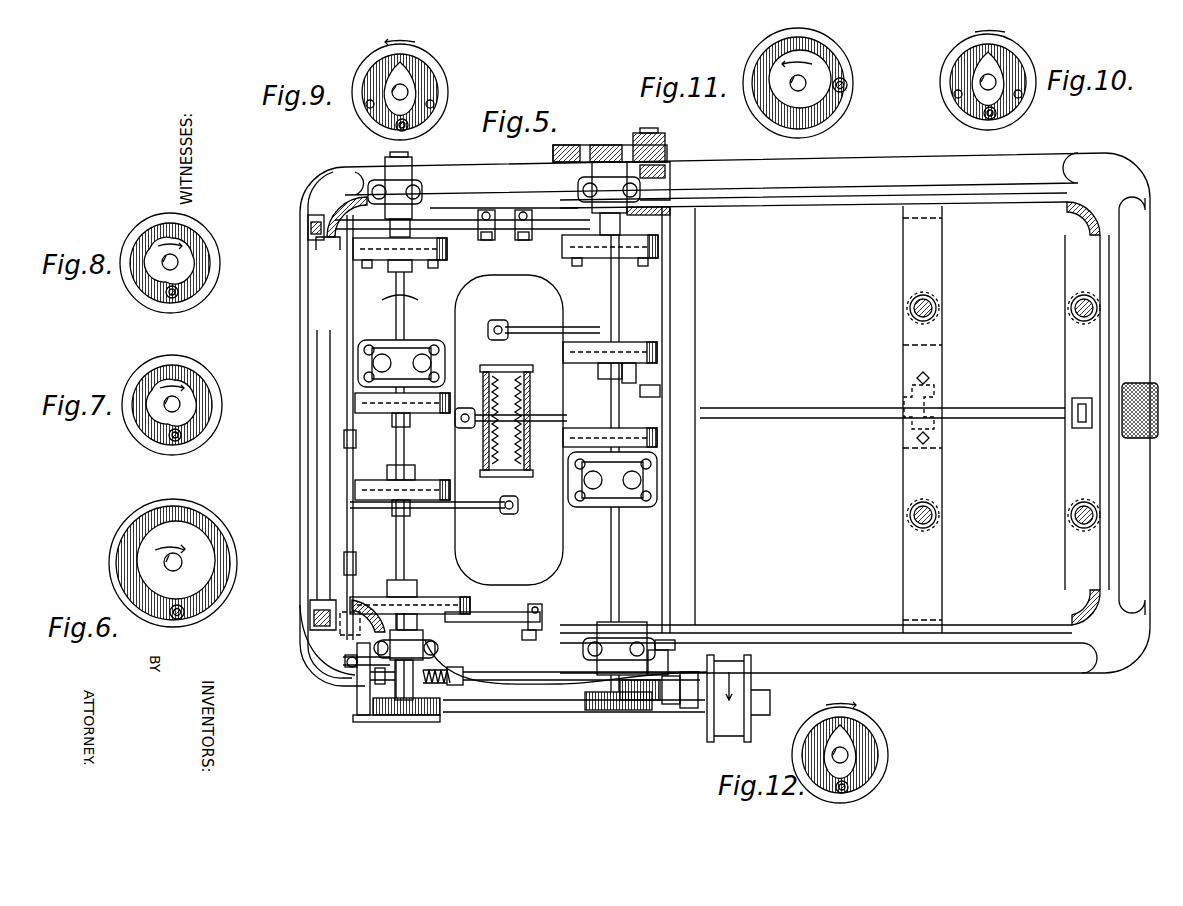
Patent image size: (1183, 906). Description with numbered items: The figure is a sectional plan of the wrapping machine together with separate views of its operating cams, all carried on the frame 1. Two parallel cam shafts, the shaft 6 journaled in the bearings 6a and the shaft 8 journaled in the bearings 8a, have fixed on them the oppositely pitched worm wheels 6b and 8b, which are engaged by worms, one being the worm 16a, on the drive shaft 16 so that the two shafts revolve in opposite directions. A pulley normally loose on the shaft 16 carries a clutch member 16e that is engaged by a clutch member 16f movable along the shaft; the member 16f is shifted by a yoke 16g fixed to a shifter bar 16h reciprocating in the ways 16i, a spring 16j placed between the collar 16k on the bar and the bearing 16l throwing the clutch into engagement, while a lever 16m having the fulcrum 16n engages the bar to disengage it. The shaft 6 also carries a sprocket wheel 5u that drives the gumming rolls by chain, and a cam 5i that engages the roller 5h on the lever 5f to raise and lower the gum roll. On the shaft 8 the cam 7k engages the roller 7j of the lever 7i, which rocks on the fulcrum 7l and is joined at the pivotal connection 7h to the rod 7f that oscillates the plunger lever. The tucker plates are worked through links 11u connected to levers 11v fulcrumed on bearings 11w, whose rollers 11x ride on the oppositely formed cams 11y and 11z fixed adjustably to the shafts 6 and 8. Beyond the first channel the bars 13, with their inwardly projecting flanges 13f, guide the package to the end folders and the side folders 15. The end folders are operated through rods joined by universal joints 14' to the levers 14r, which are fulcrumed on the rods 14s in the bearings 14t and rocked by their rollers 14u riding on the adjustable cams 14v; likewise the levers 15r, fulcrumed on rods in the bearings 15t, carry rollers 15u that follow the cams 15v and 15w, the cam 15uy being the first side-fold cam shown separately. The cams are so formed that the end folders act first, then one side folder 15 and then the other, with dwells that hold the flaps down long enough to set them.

In FIG. 5, the frame 1 is at (865, 158).
In FIG. 11, the cam 5i is at (845, 62).
In FIG. 5, the cam 5i is at (553, 152).
In FIG. 11, the roller 5h is at (847, 85).
In FIG. 5, the roller 5h is at (666, 150).
In FIG. 5, the lever 5f is at (668, 170).
In FIG. 5, the sprocket wheel 5u is at (600, 712).
In FIG. 5, the shaft 6 is at (622, 320).
In FIG. 5, the bearings 6a is at (600, 496).
In FIG. 5, the worm wheel 6b is at (640, 712).
In FIG. 5, the rod 7f is at (542, 610).
In FIG. 5, the pivotal connection 7h is at (540, 634).
In FIG. 5, the lever 7i is at (482, 612).
In FIG. 6, the roller 7j is at (186, 615).
In FIG. 5, the roller 7j is at (420, 598).
In FIG. 6, the cam 7k is at (237, 568).
In FIG. 5, the cam 7k is at (317, 580).
In FIG. 5, the fulcrum 7l is at (340, 632).
In FIG. 5, the shaft 8 is at (395, 322).
In FIG. 5, the bearings 8a is at (400, 195).
In FIG. 5, the worm wheel 8b is at (432, 722).
In FIG. 5, the links 11u is at (522, 210).
In FIG. 5, the levers 11v is at (487, 240).
In FIG. 5, the bearings 11w is at (308, 226).
In FIG. 9, the rollers 11x is at (396, 125).
In FIG. 10, the rollers 11x is at (997, 113).
In FIG. 5, the rollers 11x is at (335, 250).
In FIG. 9, the cam 11y is at (432, 80).
In FIG. 5, the cam 11y is at (447, 252).
In FIG. 10, the cam 11z is at (1022, 60).
In FIG. 5, the cam 11z is at (655, 262).
In FIG. 5, the bars 13 is at (520, 460).
In FIG. 5, the flanges 13f is at (506, 420).
In FIG. 5, the universal joints 14' is at (505, 424).
In FIG. 5, the levers 14r is at (525, 330).
In FIG. 5, the rods 14s is at (660, 372).
In FIG. 5, the bearings 14t is at (660, 400).
In FIG. 12, the rollers 14u is at (849, 788).
In FIG. 5, the rollers 14u is at (397, 512).
In FIG. 12, the cams 14v is at (865, 732).
In FIG. 5, the cams 14v is at (357, 488).
In FIG. 5, the side folders 15 is at (347, 466).
In FIG. 5, the levers 15r is at (575, 415).
In FIG. 5, the bearings 15t is at (345, 555).
In FIG. 8, the rollers 15u is at (180, 296).
In FIG. 7, the rollers 15u is at (174, 441).
In FIG. 5, the rollers 15u is at (395, 424).
In FIG. 7, the cam 15uy is at (200, 385).
In FIG. 8, the cam 15v is at (200, 240).
In FIG. 5, the cam 15v is at (360, 405).
In FIG. 5, the cam 15w is at (657, 440).
In FIG. 5, the shaft 16 is at (560, 714).
In FIG. 5, the worm 16a is at (752, 684).
In FIG. 5, the clutch member 16e is at (698, 708).
In FIG. 5, the clutch member 16f is at (678, 705).
In FIG. 5, the yoke 16g is at (658, 702).
In FIG. 5, the shifter bar 16h is at (545, 685).
In FIG. 5, the ways 16i is at (668, 652).
In FIG. 5, the spring 16j is at (455, 686).
In FIG. 5, the collar 16k is at (445, 680).
In FIG. 5, the bearing 16l is at (372, 690).
In FIG. 5, the lever 16m is at (404, 702).
In FIG. 5, the fulcrum 16n is at (345, 668).